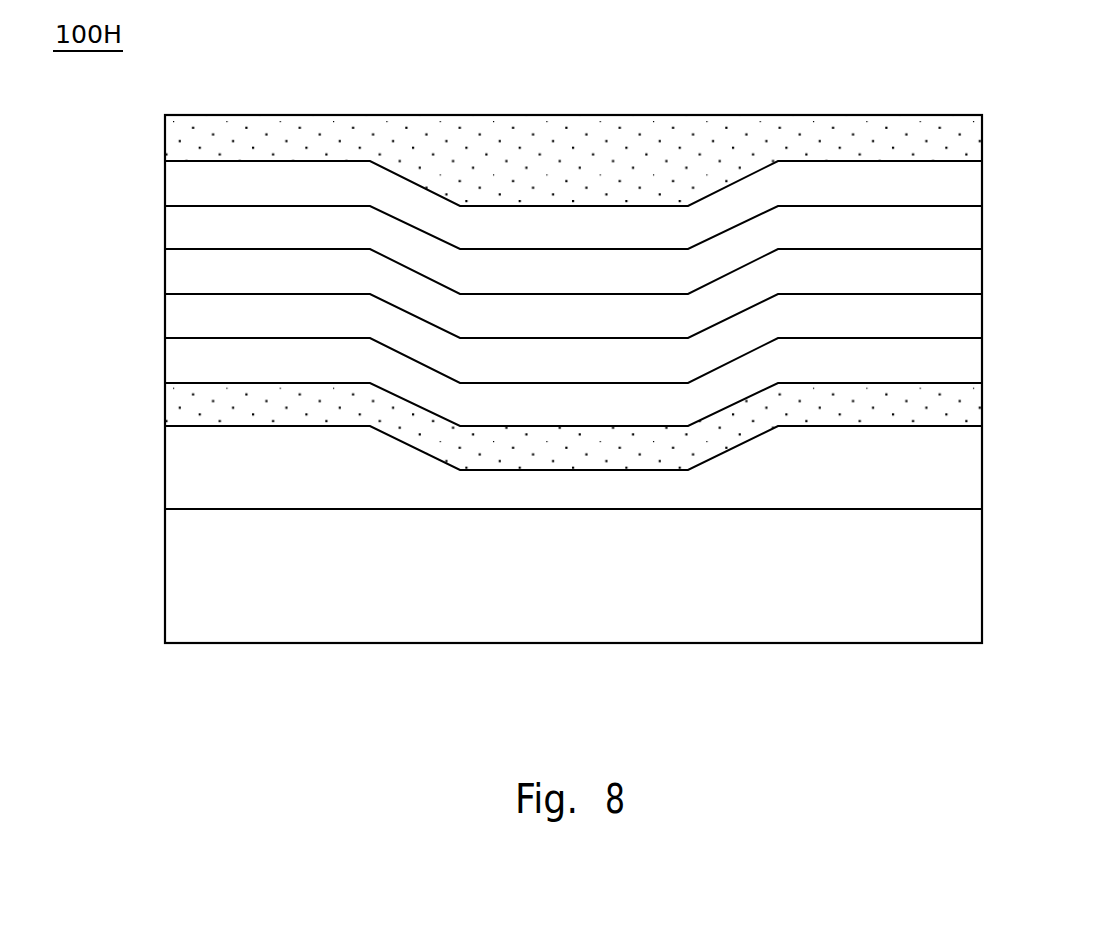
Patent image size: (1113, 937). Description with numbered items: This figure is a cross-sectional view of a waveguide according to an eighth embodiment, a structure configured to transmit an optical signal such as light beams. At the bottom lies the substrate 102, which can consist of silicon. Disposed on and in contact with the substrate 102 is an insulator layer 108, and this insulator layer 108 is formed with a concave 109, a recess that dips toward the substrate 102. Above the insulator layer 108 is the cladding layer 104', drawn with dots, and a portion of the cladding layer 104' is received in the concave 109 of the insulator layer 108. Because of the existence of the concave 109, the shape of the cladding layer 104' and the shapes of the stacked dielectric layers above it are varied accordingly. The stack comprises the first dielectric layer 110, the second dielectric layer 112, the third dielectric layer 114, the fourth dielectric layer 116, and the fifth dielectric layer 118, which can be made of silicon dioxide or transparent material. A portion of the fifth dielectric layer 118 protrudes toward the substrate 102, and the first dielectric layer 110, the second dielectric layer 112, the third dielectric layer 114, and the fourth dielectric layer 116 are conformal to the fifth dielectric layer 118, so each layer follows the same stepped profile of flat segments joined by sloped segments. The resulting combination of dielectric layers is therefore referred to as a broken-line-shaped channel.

The substrate 102 is at (973, 578).
The cladding layer 104' is at (630, 426).
The insulator layer 108 is at (973, 473).
The concave 109 is at (625, 455).
The first dielectric layer 110 is at (973, 316).
The second dielectric layer 112 is at (973, 272).
The third dielectric layer 114 is at (973, 228).
The fourth dielectric layer 116 is at (973, 184).
The fifth dielectric layer 118 is at (973, 361).